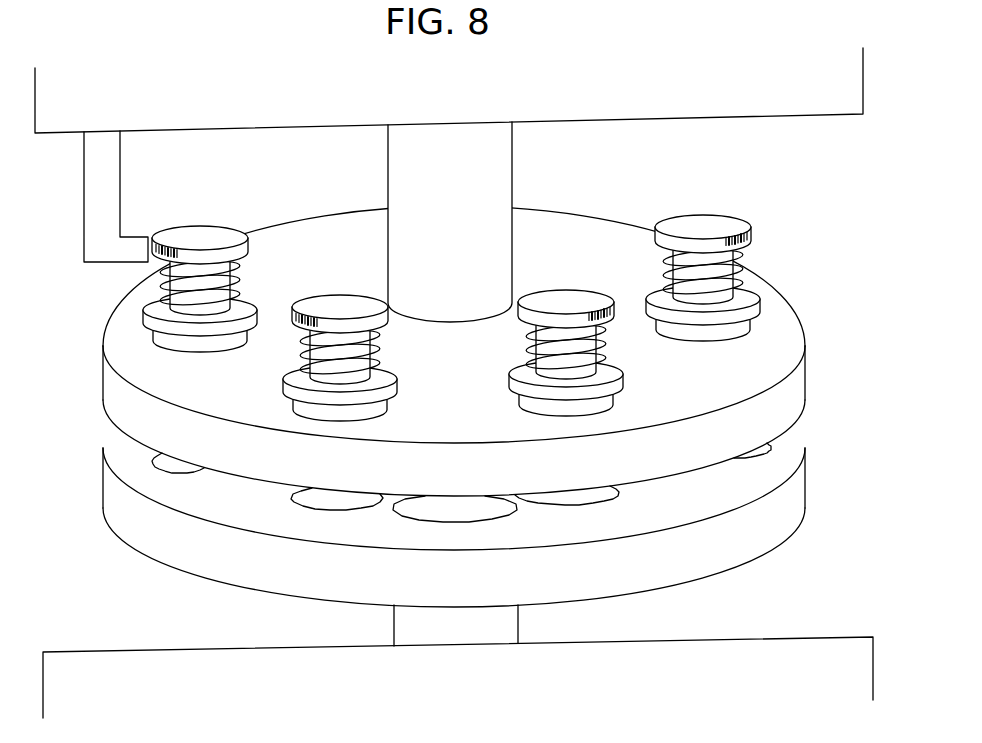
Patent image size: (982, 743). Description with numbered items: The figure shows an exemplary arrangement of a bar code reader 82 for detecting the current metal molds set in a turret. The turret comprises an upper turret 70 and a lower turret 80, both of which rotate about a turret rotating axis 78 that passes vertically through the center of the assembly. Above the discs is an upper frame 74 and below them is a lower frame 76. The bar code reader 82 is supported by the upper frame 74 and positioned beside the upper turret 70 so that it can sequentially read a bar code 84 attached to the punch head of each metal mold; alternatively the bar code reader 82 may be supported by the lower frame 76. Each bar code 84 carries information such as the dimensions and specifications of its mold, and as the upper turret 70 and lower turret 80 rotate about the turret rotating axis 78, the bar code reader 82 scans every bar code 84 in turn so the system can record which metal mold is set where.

The upper turret 70 is at (600, 224).
The upper frame 74 is at (449, 90).
The lower frame 76 is at (458, 677).
The turret rotating axis 78 is at (443, 147).
The lower turret 80 is at (690, 562).
The bar code reader 82 is at (105, 246).
The bar code 84 is at (170, 236).